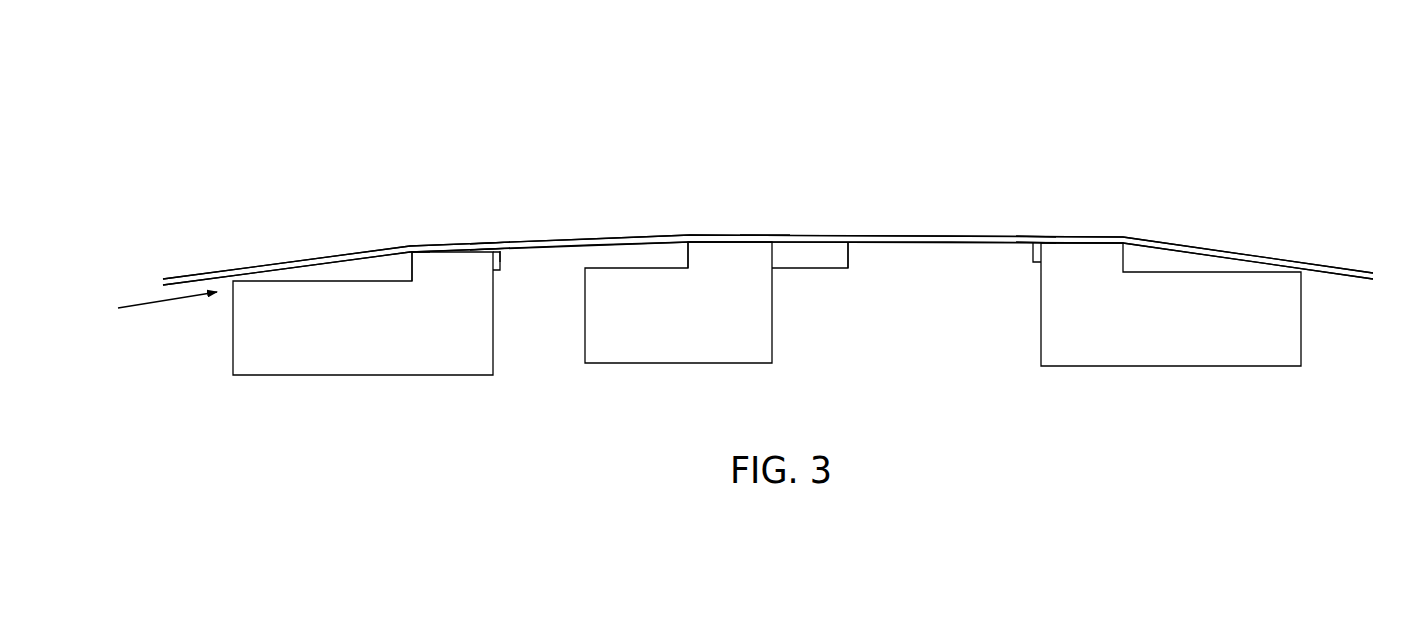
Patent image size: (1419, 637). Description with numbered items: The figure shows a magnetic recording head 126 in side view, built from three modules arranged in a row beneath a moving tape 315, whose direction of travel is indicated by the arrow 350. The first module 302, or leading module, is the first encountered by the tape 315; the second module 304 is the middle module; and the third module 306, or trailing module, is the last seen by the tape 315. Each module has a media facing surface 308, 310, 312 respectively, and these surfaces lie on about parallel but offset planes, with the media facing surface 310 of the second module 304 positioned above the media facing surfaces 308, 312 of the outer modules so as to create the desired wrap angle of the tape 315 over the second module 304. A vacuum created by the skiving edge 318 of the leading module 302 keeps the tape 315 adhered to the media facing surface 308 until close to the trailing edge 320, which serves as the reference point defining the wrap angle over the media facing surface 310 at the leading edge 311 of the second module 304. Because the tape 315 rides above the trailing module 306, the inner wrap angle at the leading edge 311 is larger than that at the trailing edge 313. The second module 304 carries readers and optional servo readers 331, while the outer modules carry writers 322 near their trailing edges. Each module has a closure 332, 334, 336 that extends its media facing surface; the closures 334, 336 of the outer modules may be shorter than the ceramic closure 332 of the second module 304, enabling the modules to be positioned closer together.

The magnetic recording head 126 is at (385, 103).
The first module 302 is at (233, 343).
The second module 304 is at (628, 268).
The third module 306 is at (1301, 325).
The media facing surface 308 is at (460, 243).
The media facing surface 310 is at (706, 233).
The media facing surface 312 is at (1082, 236).
The leading edge 311 is at (688, 253).
The trailing edge 313 is at (850, 253).
The tape 315 is at (1172, 245).
The skiving edge 318 is at (400, 262).
The trailing edge 320 is at (503, 253).
The writers 322 is at (492, 243).
The servo readers 331 is at (763, 233).
The closure 332 is at (810, 268).
The closure 334 is at (502, 258).
The closure 336 is at (1032, 252).
The arrow 350 is at (132, 302).